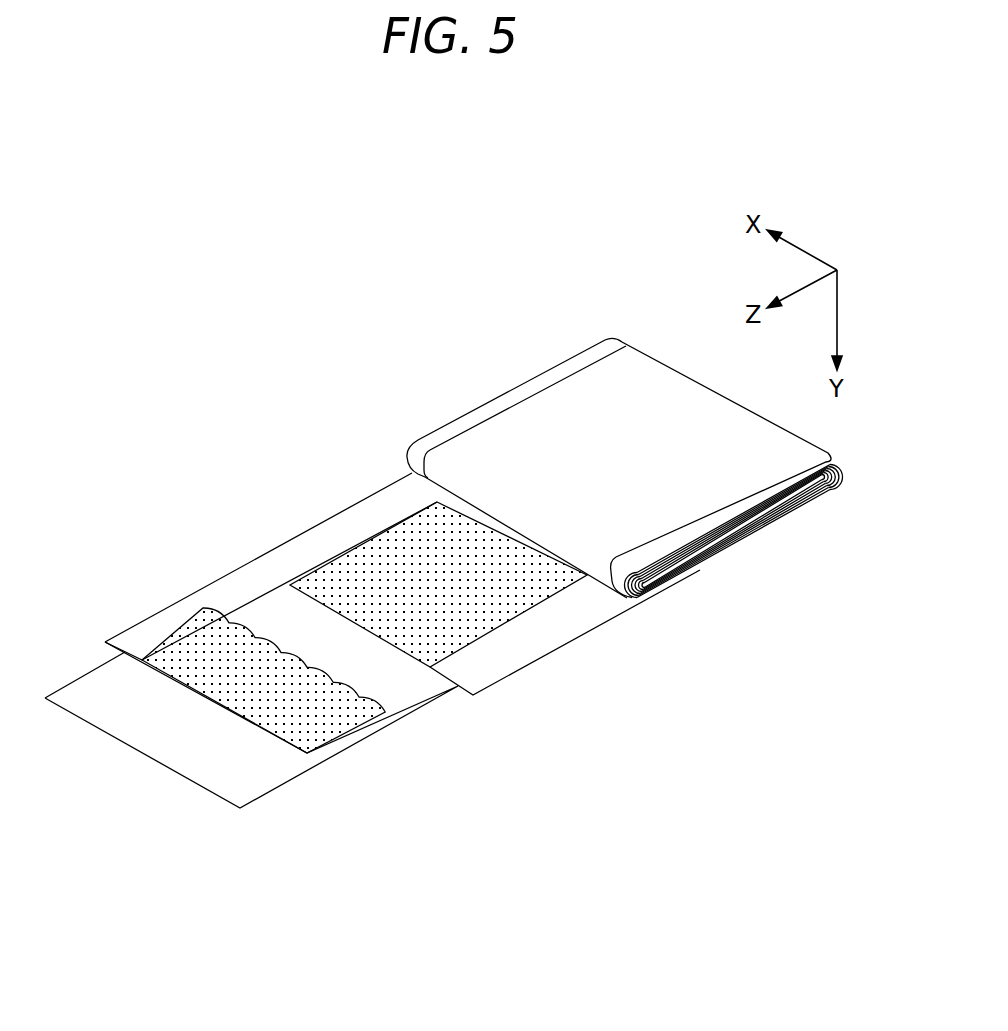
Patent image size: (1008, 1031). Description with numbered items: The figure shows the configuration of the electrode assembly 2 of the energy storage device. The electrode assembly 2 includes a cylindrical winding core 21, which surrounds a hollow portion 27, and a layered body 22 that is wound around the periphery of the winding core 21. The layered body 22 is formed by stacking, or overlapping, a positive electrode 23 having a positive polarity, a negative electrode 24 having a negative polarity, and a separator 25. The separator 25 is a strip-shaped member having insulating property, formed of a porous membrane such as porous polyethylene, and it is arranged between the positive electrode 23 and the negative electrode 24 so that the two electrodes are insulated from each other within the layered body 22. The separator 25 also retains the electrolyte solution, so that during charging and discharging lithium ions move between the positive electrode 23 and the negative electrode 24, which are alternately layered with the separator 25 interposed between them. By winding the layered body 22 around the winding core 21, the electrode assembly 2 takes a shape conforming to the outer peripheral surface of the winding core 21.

The electrode assembly 2 is at (644, 533).
The winding core 21 is at (684, 553).
The layered body 22 is at (731, 574).
The positive electrode 23 is at (388, 542).
The negative electrode 24 is at (163, 627).
The separator 25 is at (390, 694).
The hollow portion 27 is at (823, 481).